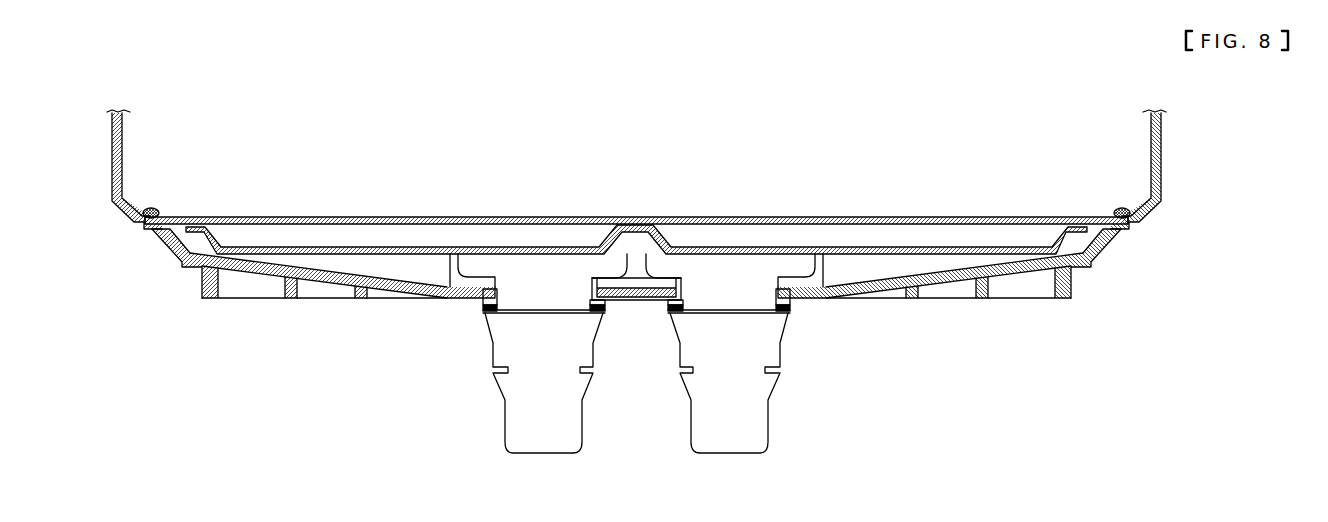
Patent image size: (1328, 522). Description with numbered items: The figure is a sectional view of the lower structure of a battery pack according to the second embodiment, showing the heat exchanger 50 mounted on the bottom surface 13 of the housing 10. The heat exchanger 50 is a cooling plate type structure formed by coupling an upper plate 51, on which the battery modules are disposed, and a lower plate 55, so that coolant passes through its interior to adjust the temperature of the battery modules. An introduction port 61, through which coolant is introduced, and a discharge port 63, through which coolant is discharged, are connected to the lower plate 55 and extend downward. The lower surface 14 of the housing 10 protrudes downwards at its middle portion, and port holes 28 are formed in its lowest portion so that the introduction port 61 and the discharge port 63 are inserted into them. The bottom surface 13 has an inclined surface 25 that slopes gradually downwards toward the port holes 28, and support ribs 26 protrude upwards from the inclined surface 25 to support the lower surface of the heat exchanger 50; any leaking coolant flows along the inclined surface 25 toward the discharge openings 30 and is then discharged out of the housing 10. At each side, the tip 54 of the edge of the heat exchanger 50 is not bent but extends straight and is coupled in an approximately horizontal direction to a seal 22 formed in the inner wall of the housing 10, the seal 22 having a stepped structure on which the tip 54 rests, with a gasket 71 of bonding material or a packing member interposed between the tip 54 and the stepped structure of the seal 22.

The housing 10 is at (1171, 154).
The bottom surface 13 is at (290, 264).
The lower surface 14 is at (390, 299).
The seal 22 is at (152, 234).
The inclined surface 25 is at (325, 270).
The support ribs 26 is at (876, 274).
The port holes 28 is at (488, 316).
The discharge openings 30 is at (480, 305).
The heat exchanger 50 is at (636, 175).
The upper plate 51 is at (395, 216).
The tip 54 is at (160, 216).
The lower plate 55 is at (553, 247).
The introduction port 61 is at (519, 440).
The discharge port 63 is at (754, 440).
The gasket 71 is at (152, 207).